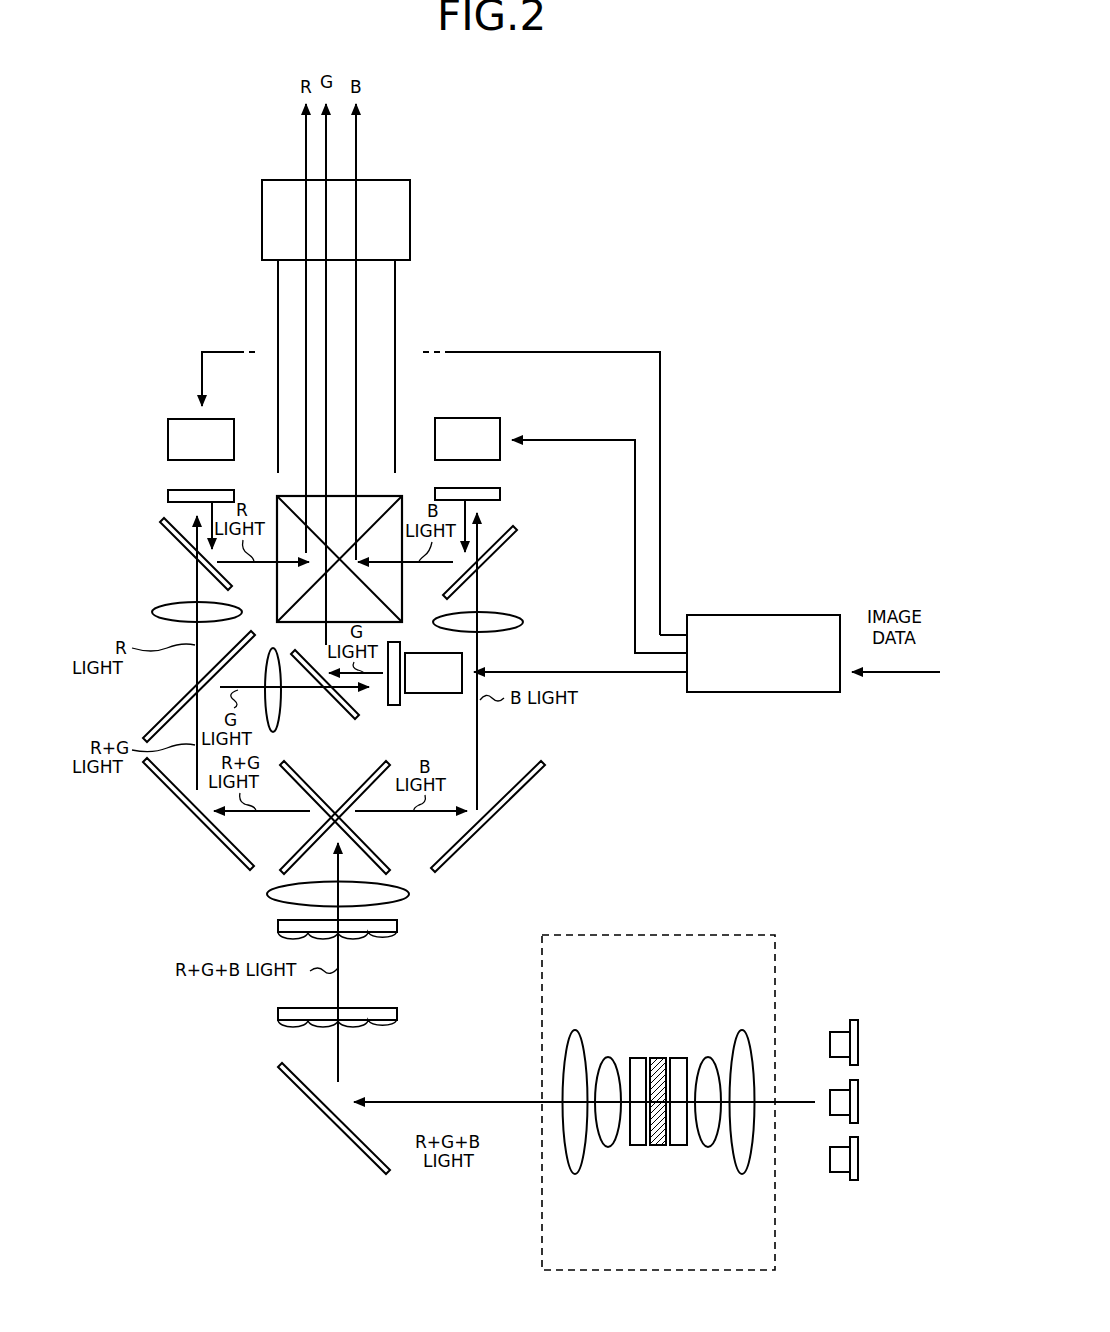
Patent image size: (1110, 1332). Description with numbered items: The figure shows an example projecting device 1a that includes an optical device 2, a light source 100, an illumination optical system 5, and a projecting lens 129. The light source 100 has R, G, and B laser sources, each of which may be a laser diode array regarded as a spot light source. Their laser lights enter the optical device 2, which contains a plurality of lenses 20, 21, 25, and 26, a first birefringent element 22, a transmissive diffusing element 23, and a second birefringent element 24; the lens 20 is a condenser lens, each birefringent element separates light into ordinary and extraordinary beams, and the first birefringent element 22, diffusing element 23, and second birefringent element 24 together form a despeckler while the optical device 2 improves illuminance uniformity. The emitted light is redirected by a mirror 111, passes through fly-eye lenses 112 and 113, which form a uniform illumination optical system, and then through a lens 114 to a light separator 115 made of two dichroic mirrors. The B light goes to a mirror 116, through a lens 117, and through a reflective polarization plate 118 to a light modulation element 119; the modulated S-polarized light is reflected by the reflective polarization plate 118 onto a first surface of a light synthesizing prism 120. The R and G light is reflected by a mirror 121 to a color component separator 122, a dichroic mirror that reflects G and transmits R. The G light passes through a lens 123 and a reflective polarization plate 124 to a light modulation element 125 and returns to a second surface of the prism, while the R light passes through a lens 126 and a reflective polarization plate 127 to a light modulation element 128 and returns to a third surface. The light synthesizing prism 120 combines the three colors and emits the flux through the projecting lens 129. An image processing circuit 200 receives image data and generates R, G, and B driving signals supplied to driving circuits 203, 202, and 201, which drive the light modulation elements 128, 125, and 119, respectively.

The projecting device 1a is at (836, 179).
The optical device 2 is at (672, 932).
The illumination optical system 5 is at (138, 873).
The lens 20 is at (745, 1175).
The lens 21 is at (707, 1057).
The first birefringent element 22 is at (680, 1147).
The diffusing element 23 is at (657, 1057).
The second birefringent element 24 is at (638, 1147).
The lens 25 is at (608, 1057).
The lens 26 is at (572, 1175).
The light source 100 is at (893, 1006).
The mirror 111 is at (355, 1140).
The fly-eye lens 112 is at (278, 1010).
The fly-eye lens 113 is at (278, 925).
The lens 114 is at (269, 892).
The light separator 115 is at (338, 782).
The mirror 116 is at (524, 775).
The lens 117 is at (523, 622).
The reflective polarization plate 118 is at (510, 546).
The light modulation element 119 is at (500, 494).
The light synthesizing prism 120 is at (300, 493).
The mirror 121 is at (155, 775).
The color component separator 122 is at (155, 730).
The lens 123 is at (282, 713).
The reflective polarization plate 124 is at (357, 715).
The light modulation element 125 is at (400, 697).
The lens 126 is at (152, 612).
The reflective polarization plate 127 is at (162, 535).
The light modulation element 128 is at (168, 494).
The projecting lens 129 is at (395, 297).
The image processing circuit 200 is at (765, 614).
The driving circuit 201 is at (478, 416).
The driving circuit 202 is at (465, 657).
The driving circuit 203 is at (178, 415).